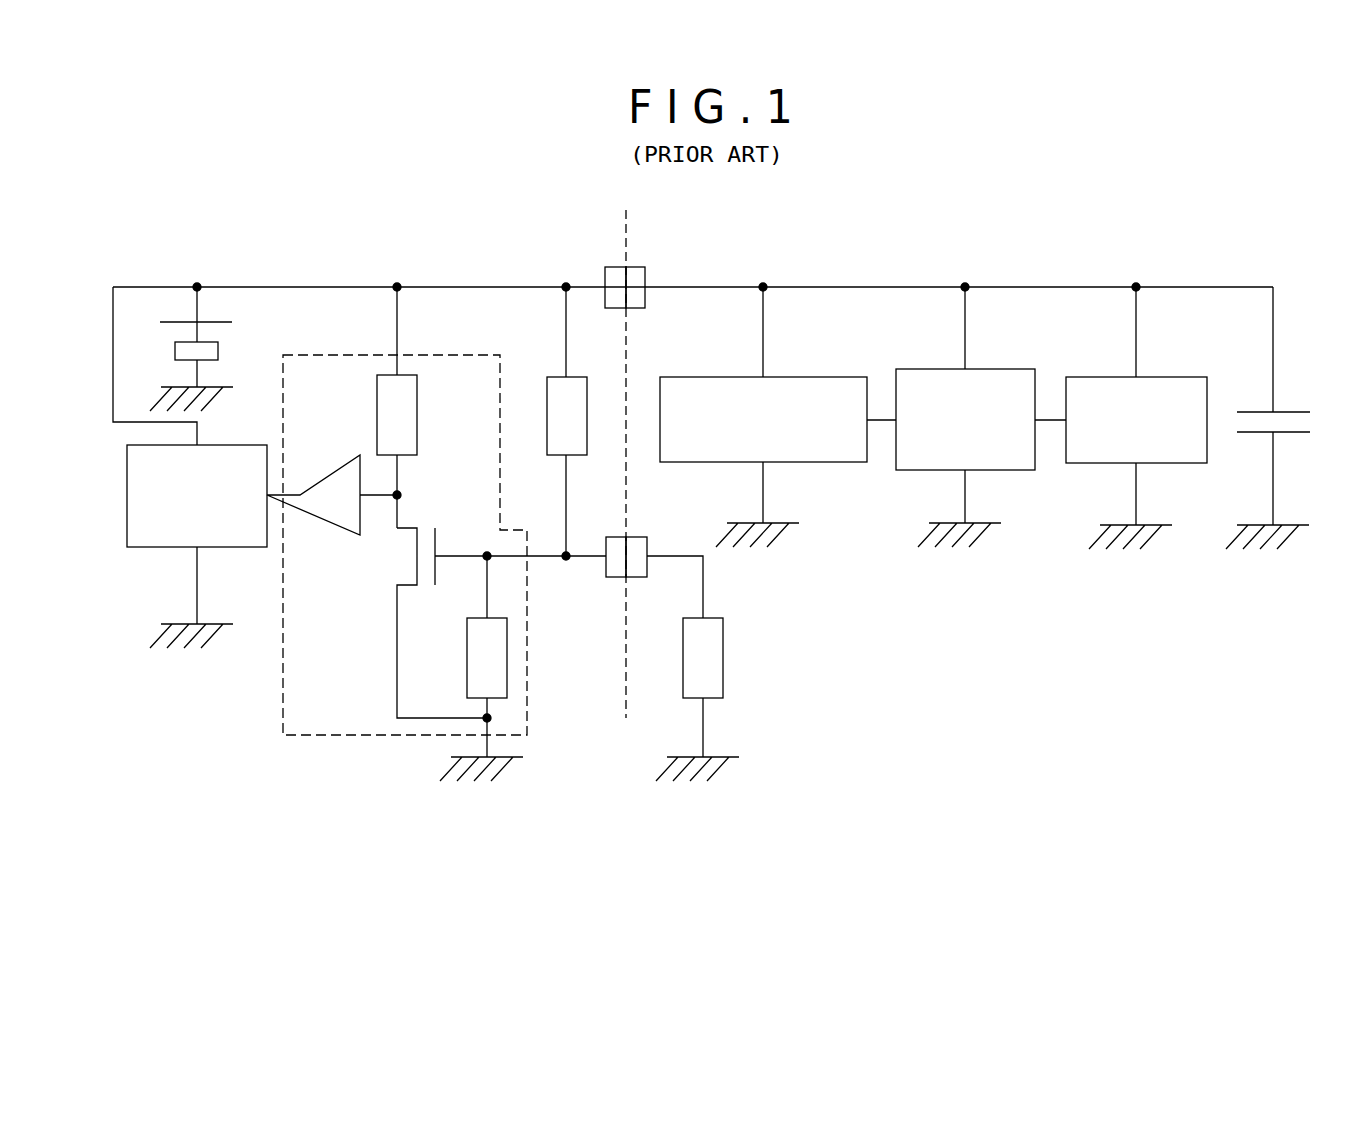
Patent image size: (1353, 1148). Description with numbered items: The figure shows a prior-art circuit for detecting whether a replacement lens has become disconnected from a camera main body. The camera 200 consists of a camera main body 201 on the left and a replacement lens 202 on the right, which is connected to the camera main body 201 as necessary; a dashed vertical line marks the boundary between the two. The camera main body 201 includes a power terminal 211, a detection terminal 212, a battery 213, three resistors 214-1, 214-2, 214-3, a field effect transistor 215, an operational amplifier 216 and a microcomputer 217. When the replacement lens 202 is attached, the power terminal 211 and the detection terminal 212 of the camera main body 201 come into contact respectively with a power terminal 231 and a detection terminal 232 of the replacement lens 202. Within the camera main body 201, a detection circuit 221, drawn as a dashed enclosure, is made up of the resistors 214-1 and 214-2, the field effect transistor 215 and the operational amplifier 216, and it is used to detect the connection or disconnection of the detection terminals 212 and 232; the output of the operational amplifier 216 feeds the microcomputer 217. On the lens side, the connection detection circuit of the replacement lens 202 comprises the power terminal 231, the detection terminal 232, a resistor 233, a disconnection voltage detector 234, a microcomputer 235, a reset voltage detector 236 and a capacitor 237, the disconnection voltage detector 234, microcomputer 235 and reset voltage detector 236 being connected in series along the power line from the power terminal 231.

The camera 200 is at (606, 842).
The camera main body 201 is at (329, 778).
The replacement lens 202 is at (826, 774).
The power terminal 211 is at (612, 267).
The detection terminal 212 is at (612, 537).
The battery 213 is at (215, 322).
The resistor 214-1 is at (417, 420).
The resistor 214-2 is at (507, 655).
The resistor 214-3 is at (548, 375).
The field effect transistor 215 is at (412, 583).
The operational amplifier 216 is at (335, 470).
The microcomputer 217 is at (240, 445).
The detection circuit 221 is at (350, 355).
The power terminal 231 is at (640, 267).
The detection terminal 232 is at (640, 537).
The resistor 233 is at (723, 656).
The disconnection voltage detector 234 is at (815, 377).
The microcomputer 235 is at (985, 369).
The reset voltage detector 236 is at (1162, 377).
The capacitor 237 is at (1288, 412).